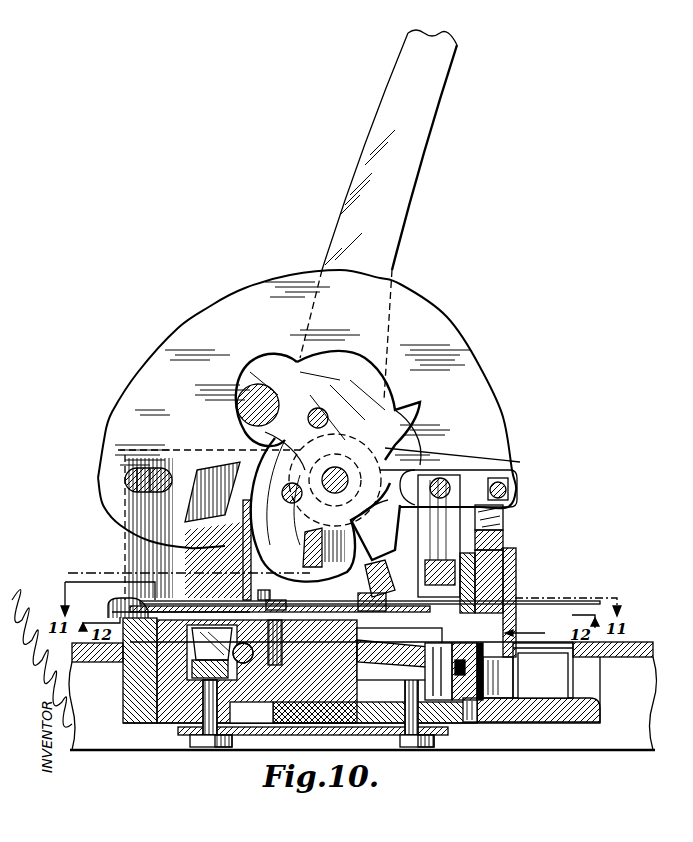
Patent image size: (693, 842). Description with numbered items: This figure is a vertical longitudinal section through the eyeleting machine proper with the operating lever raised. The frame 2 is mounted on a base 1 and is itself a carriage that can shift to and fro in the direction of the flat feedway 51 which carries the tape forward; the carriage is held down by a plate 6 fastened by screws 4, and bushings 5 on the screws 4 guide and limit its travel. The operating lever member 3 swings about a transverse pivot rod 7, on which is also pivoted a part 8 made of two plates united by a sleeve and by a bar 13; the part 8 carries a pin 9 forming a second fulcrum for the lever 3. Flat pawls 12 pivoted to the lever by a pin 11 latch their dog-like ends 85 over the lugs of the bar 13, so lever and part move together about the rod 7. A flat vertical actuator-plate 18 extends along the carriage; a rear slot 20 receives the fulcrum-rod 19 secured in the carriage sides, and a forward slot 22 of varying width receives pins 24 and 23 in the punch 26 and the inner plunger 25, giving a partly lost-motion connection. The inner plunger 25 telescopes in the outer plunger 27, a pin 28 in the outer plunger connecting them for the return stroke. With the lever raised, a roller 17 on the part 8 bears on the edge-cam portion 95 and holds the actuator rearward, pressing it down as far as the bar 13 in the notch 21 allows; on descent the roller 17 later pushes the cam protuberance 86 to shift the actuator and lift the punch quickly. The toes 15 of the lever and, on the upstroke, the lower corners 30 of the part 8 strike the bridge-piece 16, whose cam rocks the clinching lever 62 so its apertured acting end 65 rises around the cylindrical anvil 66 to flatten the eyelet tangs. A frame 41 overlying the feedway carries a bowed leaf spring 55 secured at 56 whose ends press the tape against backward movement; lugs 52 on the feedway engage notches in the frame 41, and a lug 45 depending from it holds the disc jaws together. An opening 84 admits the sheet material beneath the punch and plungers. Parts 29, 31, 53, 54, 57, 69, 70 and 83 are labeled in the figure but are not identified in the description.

The base 1 is at (525, 722).
The frame 2 is at (235, 557).
The operating lever member 3 is at (407, 140).
The screws 4 is at (196, 741).
The bushings 5 is at (176, 712).
The plate 6 is at (270, 736).
The transverse pivot rod 7 is at (336, 468).
The part 8 is at (293, 393).
The rod or pin 9 is at (320, 410).
The rod or pin 11 is at (270, 468).
The angular-shaped flat pawls 12 is at (258, 452).
The bar 13 is at (470, 445).
The toes 15 is at (383, 538).
The bridge-piece 16 is at (328, 562).
The roller 17 is at (245, 390).
The actuator-plate 18 is at (160, 378).
The fulcrum-rod 19 is at (150, 484).
The slot 20 is at (130, 472).
The notch 21 is at (468, 460).
The slot 22 is at (505, 478).
The transverse pin 23 is at (452, 478).
The transverse pin 24 is at (503, 484).
The inner plunger member 25 is at (500, 513).
The punch 26 is at (503, 519).
The outer plunger member 27 is at (503, 532).
The transverse pin 28 is at (516, 558).
The arm 29 is at (400, 436).
The lower corners 30 is at (300, 540).
The shaft 31 is at (500, 597).
The frame 41 is at (198, 604).
The lug 45 is at (440, 634).
The feedway 51 is at (118, 606).
The upstanding lugs 52 is at (380, 597).
The pawl 53 is at (383, 563).
The plate 54 is at (118, 611).
The bowed leaf spring 55 is at (232, 604).
The securing point 56 is at (263, 592).
The block 57 is at (276, 602).
The rocking lever member 62 is at (176, 572).
The acting end 65 is at (460, 672).
The cylindrical anvil 66 is at (463, 653).
The bar 69 is at (468, 645).
The block 70 is at (440, 644).
The flange 83 is at (640, 645).
The opening 84 is at (535, 633).
The dog-like forward ends 85 is at (348, 505).
The cam protuberance 86 is at (297, 362).
The edge-cam portion 95 is at (265, 433).